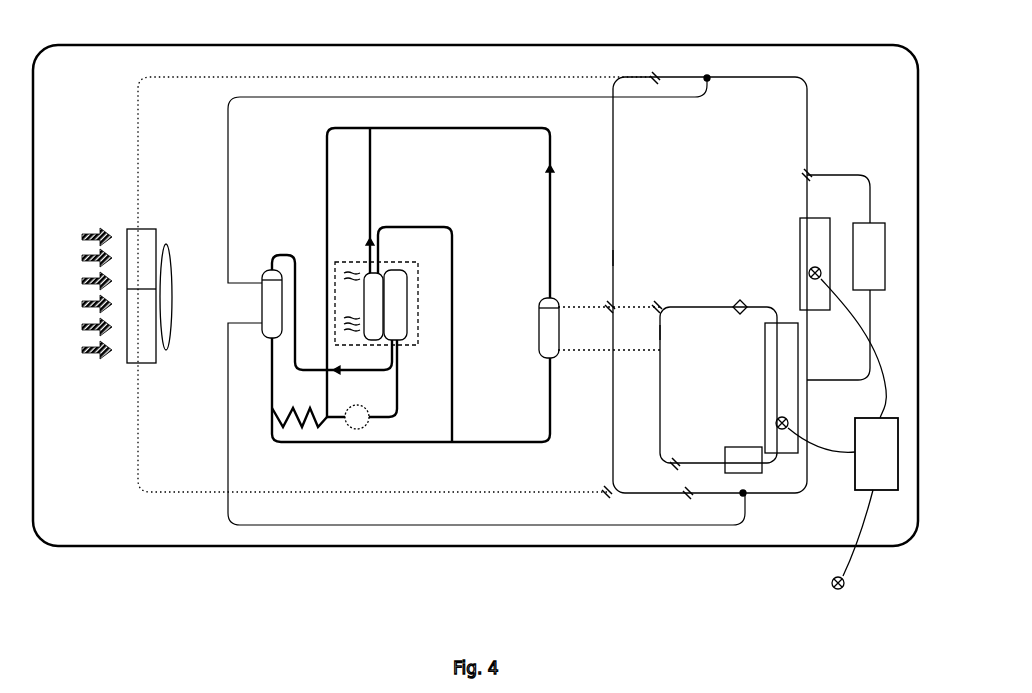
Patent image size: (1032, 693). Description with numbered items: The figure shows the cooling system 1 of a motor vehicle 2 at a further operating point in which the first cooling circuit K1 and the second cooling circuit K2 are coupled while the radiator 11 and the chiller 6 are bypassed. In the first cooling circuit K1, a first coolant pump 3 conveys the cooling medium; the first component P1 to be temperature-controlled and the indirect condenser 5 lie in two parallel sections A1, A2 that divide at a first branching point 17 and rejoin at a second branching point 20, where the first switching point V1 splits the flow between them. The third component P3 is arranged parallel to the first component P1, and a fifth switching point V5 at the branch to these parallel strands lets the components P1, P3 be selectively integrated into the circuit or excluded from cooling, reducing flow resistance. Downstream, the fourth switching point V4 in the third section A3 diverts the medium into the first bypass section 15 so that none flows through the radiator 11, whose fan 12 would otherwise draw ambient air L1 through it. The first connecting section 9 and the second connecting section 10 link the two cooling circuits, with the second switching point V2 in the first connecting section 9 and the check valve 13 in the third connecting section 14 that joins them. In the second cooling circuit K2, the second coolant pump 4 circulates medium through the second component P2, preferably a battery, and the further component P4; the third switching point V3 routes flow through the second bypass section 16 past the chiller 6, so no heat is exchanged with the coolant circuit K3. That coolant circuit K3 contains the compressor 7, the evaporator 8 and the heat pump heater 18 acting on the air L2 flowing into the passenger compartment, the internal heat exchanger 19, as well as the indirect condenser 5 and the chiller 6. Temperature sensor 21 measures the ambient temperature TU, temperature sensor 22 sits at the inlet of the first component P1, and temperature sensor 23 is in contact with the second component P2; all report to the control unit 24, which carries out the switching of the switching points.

The cooling system 1 is at (94, 80).
The motor vehicle 2 is at (113, 44).
The first coolant pump 3 is at (655, 72).
The second coolant pump 4 is at (747, 305).
The indirect condenser 5 is at (272, 304).
The chiller 6 is at (549, 328).
The compressor 7 is at (362, 430).
The evaporator 8 is at (373, 306).
The first connecting section 9 is at (697, 470).
The second connecting section 10 is at (660, 473).
The radiator 11 is at (141, 296).
The fan 12 is at (172, 305).
The check valve 13 is at (676, 460).
The third connecting section 14 is at (688, 463).
The first bypass section 15 is at (614, 258).
The second bypass section 16 is at (663, 332).
The first branching point 17 is at (708, 78).
The heat pump heater 18 is at (395, 305).
The internal heat exchanger 19 is at (275, 424).
The second branching point 20 is at (746, 493).
The temperature sensor 21 is at (848, 596).
The temperature sensor 22 is at (810, 270).
The temperature sensor 23 is at (790, 418).
The control unit 24 is at (886, 465).
The section A1 is at (810, 122).
The section A2 is at (223, 238).
The third section A3 is at (468, 493).
The first cooling circuit K1 is at (806, 88).
The second cooling circuit K2 is at (705, 305).
The coolant circuit K3 is at (525, 130).
The ambient air L1 is at (81, 293).
The air flowing into the passenger compartment L2 is at (376, 303).
The first component to be temperature-controlled P1 is at (823, 256).
The second component to be temperature-controlled P2 is at (788, 381).
The third component to be temperature-controlled P3 is at (846, 277).
The component to be temperature-controlled P4 is at (743, 460).
The first switching point V1 is at (747, 497).
The second switching point V2 is at (690, 496).
The third switching point V3 is at (659, 305).
The fourth switching point V4 is at (607, 489).
The fifth switching point V5 is at (812, 168).
The ambient temperature TU is at (824, 616).